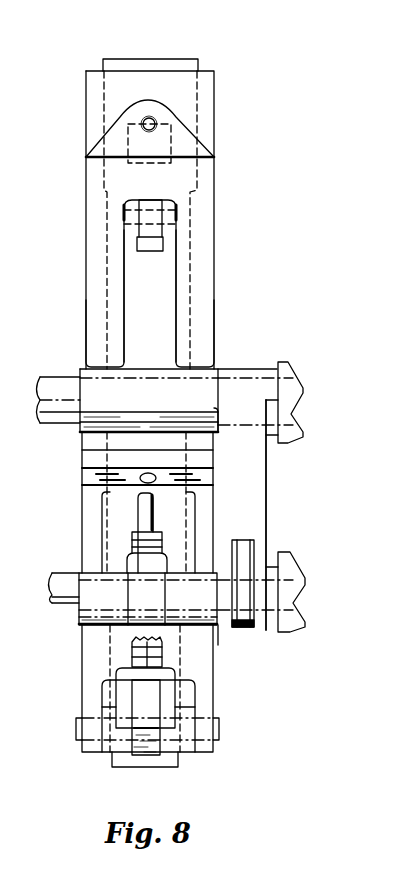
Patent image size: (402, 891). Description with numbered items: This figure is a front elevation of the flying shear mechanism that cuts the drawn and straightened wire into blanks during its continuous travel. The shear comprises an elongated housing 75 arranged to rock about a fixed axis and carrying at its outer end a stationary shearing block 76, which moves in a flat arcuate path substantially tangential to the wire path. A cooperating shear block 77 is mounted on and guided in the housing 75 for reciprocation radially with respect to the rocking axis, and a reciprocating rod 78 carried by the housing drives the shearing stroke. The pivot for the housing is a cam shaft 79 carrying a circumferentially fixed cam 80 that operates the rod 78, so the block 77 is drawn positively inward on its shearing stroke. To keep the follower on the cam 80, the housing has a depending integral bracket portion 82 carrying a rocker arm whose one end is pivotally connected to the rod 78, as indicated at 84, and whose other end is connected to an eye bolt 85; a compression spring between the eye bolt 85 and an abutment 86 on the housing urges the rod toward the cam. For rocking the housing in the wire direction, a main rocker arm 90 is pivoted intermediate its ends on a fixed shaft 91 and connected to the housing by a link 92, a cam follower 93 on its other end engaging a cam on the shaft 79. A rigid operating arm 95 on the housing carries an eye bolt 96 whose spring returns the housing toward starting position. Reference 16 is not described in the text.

The clamp body 16 is at (222, 112).
The shear block 77 is at (112, 62).
The stationary shearing block 76 is at (157, 118).
The reciprocating rod 78 is at (103, 244).
The elongated housing 75 is at (87, 326).
The link 92 is at (148, 203).
The main rocker arm 90 is at (174, 278).
The shaft 91 is at (53, 378).
The operating arm 95 is at (85, 525).
The abutment 86 is at (98, 477).
The eye bolt 96 is at (140, 520).
The cam shaft 79 is at (63, 580).
The cam 80 is at (130, 632).
The cam follower 93 is at (253, 558).
The eye bolt 85 is at (163, 643).
The bracket portion 82 is at (90, 693).
The pivotal connection 84 is at (220, 727).